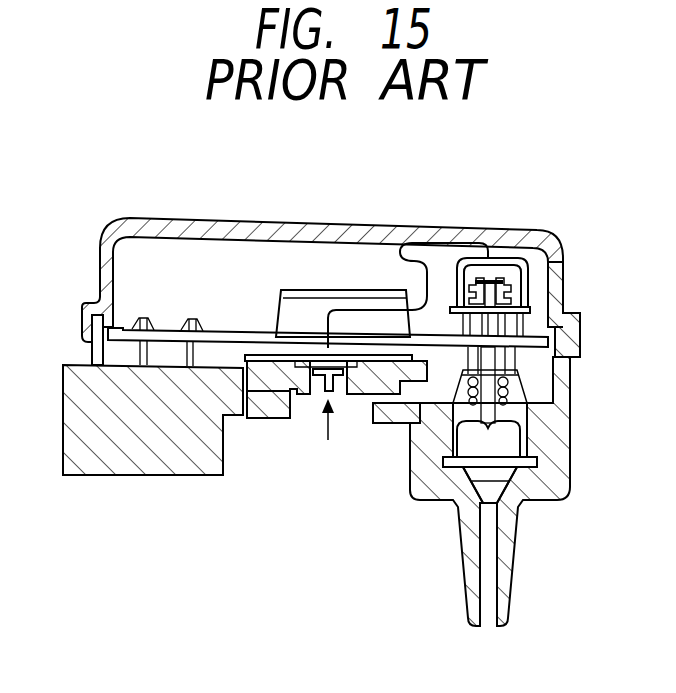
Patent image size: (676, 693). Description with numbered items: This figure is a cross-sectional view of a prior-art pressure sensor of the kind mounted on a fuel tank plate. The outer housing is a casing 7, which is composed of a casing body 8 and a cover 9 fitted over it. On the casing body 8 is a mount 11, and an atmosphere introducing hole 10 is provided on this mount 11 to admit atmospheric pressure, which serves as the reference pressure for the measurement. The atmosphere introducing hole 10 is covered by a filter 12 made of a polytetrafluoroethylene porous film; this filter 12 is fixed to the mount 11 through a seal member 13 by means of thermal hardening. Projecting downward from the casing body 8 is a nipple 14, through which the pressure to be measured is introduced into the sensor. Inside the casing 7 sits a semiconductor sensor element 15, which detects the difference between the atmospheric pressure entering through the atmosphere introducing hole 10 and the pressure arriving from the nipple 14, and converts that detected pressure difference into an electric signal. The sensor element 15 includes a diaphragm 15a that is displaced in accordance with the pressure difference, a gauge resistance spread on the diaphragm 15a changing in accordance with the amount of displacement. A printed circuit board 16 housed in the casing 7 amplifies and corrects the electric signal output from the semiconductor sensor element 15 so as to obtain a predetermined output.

The casing 7 is at (251, 220).
The casing body 8 is at (116, 455).
The cover 9 is at (108, 236).
The atmosphere introducing hole 10 is at (346, 393).
The mount 11 is at (275, 369).
The filter 12 is at (308, 381).
The seal member 13 is at (250, 351).
The nipple 14 is at (460, 551).
The semiconductor sensor element 15 is at (490, 268).
The diaphragm 15a is at (528, 262).
The printed circuit board 16 is at (303, 290).